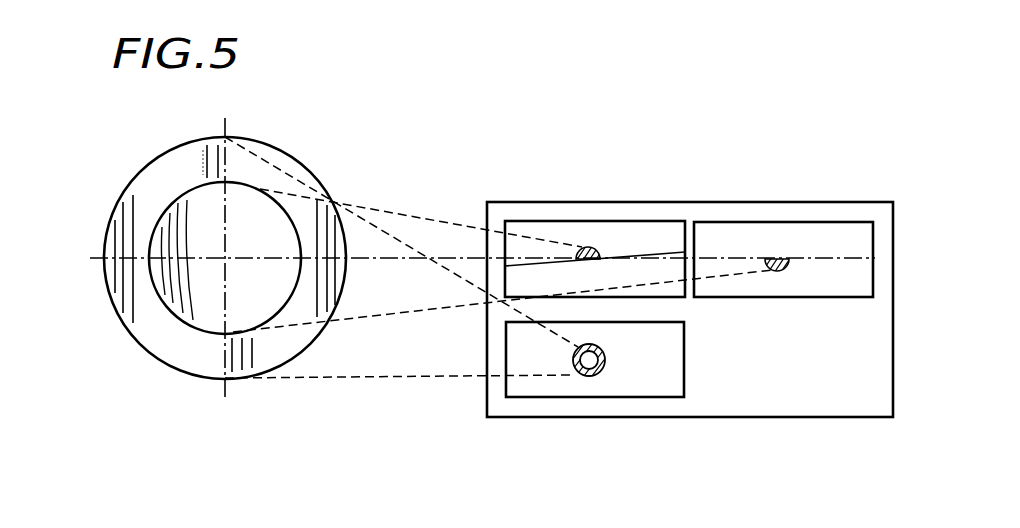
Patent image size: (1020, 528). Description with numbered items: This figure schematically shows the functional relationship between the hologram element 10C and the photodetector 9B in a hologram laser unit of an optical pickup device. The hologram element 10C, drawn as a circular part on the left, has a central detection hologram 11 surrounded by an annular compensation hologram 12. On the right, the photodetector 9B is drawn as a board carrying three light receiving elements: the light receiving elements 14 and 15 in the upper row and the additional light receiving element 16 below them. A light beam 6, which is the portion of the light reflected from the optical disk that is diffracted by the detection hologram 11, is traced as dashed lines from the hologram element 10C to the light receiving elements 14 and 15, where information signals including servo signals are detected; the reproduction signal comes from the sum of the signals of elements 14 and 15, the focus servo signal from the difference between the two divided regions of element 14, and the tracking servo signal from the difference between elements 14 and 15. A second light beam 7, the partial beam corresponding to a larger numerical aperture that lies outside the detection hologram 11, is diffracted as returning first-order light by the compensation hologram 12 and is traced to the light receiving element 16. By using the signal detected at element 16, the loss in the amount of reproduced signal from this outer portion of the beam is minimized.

The hologram element 10C is at (202, 280).
The compensation hologram 12 is at (152, 205).
The detection hologram 11 is at (263, 222).
The light beam 6 is at (402, 210).
The light beam 7 is at (412, 240).
The photodetector 9B is at (690, 310).
The light receiving element 14 is at (620, 232).
The light receiving element 15 is at (753, 232).
The light receiving element 16 is at (635, 386).